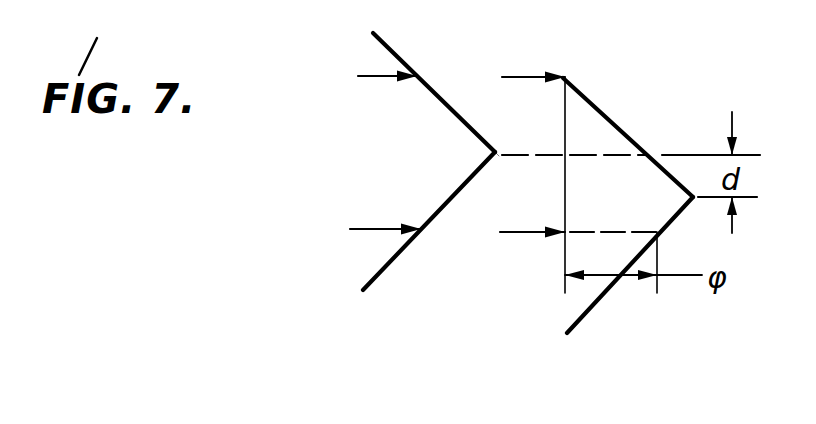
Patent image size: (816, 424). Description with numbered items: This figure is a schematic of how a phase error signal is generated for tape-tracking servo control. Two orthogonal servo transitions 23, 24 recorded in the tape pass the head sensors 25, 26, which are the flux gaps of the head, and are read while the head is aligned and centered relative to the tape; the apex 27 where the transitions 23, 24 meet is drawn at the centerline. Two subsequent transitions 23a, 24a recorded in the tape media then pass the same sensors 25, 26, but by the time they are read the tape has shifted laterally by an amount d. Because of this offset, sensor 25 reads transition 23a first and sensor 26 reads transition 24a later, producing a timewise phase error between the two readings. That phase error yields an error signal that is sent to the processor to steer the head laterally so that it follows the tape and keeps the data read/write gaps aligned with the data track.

The servo transition 23 is at (403, 56).
The servo transition 24 is at (402, 258).
The subsequent servo transition 23a is at (617, 121).
The subsequent servo transition 24a is at (596, 303).
The head sensor 25 is at (372, 78).
The head sensor 26 is at (378, 229).
The apex of reflecting surfaces 27 is at (497, 151).